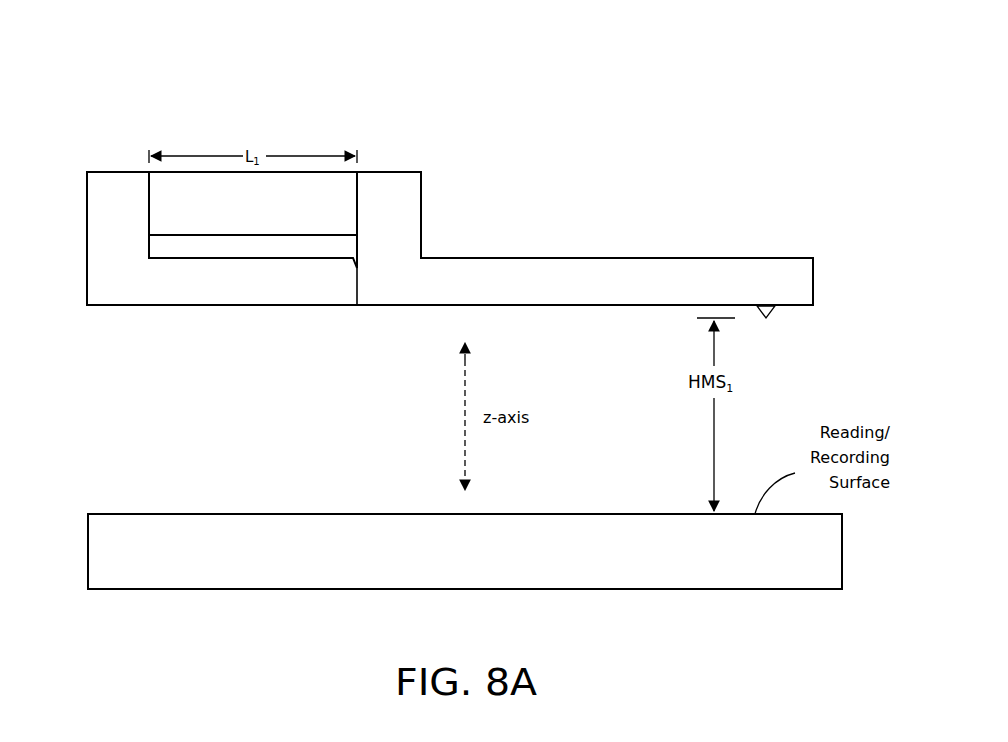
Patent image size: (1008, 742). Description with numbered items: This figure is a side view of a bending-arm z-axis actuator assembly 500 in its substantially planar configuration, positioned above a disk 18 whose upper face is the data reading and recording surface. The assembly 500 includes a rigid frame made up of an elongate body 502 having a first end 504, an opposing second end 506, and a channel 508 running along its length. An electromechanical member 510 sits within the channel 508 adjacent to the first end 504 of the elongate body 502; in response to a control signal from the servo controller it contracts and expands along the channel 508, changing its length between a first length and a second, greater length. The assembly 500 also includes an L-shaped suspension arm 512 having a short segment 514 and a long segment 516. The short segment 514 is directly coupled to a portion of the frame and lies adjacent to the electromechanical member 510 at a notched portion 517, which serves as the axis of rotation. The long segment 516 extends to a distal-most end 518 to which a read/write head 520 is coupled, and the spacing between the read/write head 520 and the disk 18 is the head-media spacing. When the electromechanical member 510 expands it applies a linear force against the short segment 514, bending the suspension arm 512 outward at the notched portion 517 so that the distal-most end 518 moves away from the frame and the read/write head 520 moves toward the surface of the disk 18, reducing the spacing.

The z-axis actuator assembly 500 is at (153, 92).
The elongate body 502 is at (237, 282).
The first end 504 is at (104, 217).
The second end 506 is at (340, 292).
The channel 508 is at (180, 252).
The electromechanical member 510 is at (270, 213).
The L-shaped suspension arm 512 is at (548, 163).
The short segment 514 is at (382, 203).
The long segment 516 is at (558, 290).
The notched portion 517 is at (357, 313).
The distal-most end 518 is at (802, 277).
The read/write head 520 is at (769, 316).
The disk 18 is at (454, 573).